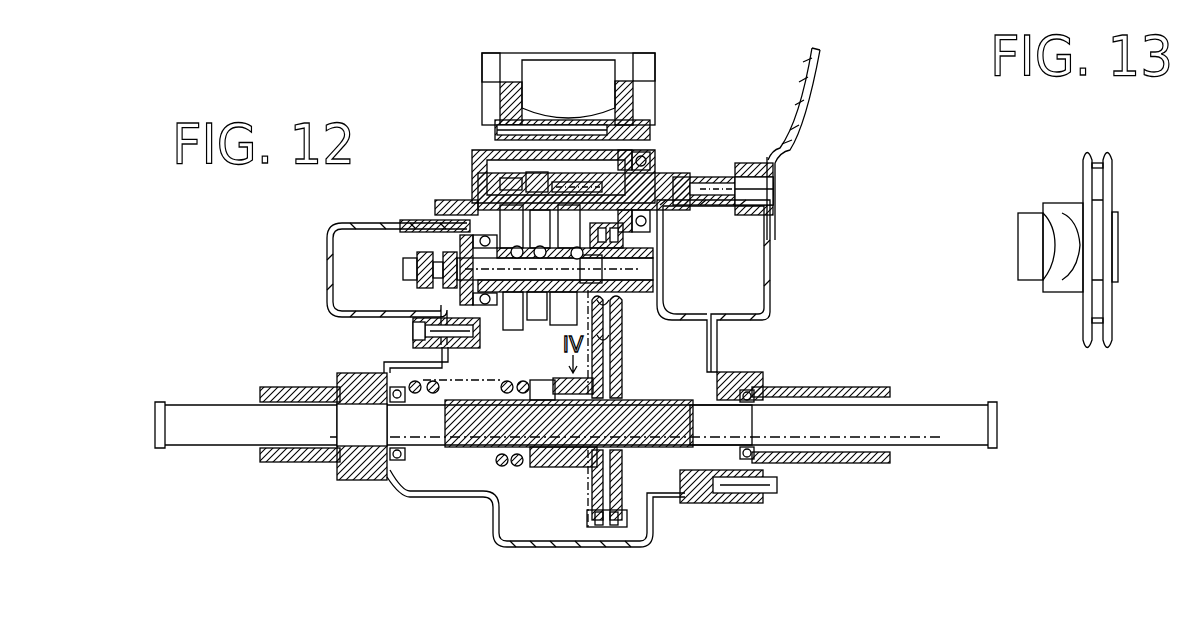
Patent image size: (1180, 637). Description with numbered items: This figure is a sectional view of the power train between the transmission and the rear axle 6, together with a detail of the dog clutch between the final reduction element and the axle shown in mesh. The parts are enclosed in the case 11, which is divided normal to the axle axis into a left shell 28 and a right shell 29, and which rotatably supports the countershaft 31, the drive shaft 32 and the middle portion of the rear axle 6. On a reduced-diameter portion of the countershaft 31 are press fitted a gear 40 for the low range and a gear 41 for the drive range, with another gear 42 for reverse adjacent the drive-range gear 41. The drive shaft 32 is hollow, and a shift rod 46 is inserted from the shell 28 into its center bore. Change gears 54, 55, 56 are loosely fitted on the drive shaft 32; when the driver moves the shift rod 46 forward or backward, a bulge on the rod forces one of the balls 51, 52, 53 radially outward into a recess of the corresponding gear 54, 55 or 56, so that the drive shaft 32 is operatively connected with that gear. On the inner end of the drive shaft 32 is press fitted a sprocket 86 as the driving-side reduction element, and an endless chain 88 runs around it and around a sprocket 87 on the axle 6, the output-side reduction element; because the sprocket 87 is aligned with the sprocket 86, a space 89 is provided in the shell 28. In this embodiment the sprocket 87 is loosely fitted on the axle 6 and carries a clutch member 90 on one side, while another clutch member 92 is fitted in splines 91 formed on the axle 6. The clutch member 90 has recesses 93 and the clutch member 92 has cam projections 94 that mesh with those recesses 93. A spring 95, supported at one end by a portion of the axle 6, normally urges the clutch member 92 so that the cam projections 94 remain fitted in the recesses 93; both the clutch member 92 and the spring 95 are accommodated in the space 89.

In FIG. 12, the rear axle 6 is at (220, 410).
In FIG. 12, the case 11 is at (818, 52).
In FIG. 12, the left shell 28 is at (528, 549).
In FIG. 12, the right shell 29 is at (592, 549).
In FIG. 12, the countershaft 31 is at (665, 183).
In FIG. 12, the drive shaft 32 is at (462, 286).
In FIG. 12, the gear for the low range 40 is at (488, 160).
In FIG. 12, the gear for the drive range 41 is at (537, 157).
In FIG. 12, the gear for reverse 42 is at (560, 182).
In FIG. 12, the shift rod 46 is at (402, 270).
In FIG. 12, the ball 51 is at (517, 246).
In FIG. 12, the ball 52 is at (540, 246).
In FIG. 12, the ball 53 is at (577, 247).
In FIG. 12, the change gear 54 is at (508, 330).
In FIG. 12, the change gear 55 is at (537, 320).
In FIG. 12, the change gear 56 is at (563, 326).
In FIG. 12, the sprocket 86 is at (622, 305).
In FIG. 12, the sprocket 87 is at (612, 343).
In FIG. 13, the sprocket 87 is at (1113, 180).
In FIG. 12, the endless chain 88 is at (622, 513).
In FIG. 12, the space 89 is at (452, 497).
In FIG. 12, the clutch member 90 is at (578, 468).
In FIG. 13, the clutch member 90 is at (1067, 210).
In FIG. 12, the splines 91 is at (504, 466).
In FIG. 12, the clutch member 92 is at (527, 468).
In FIG. 13, the clutch member 92 is at (1034, 282).
In FIG. 13, the recesses 93 is at (1050, 268).
In FIG. 12, the cam projections 94 is at (568, 470).
In FIG. 13, the cam projections 94 is at (1073, 245).
In FIG. 12, the spring 95 is at (508, 383).